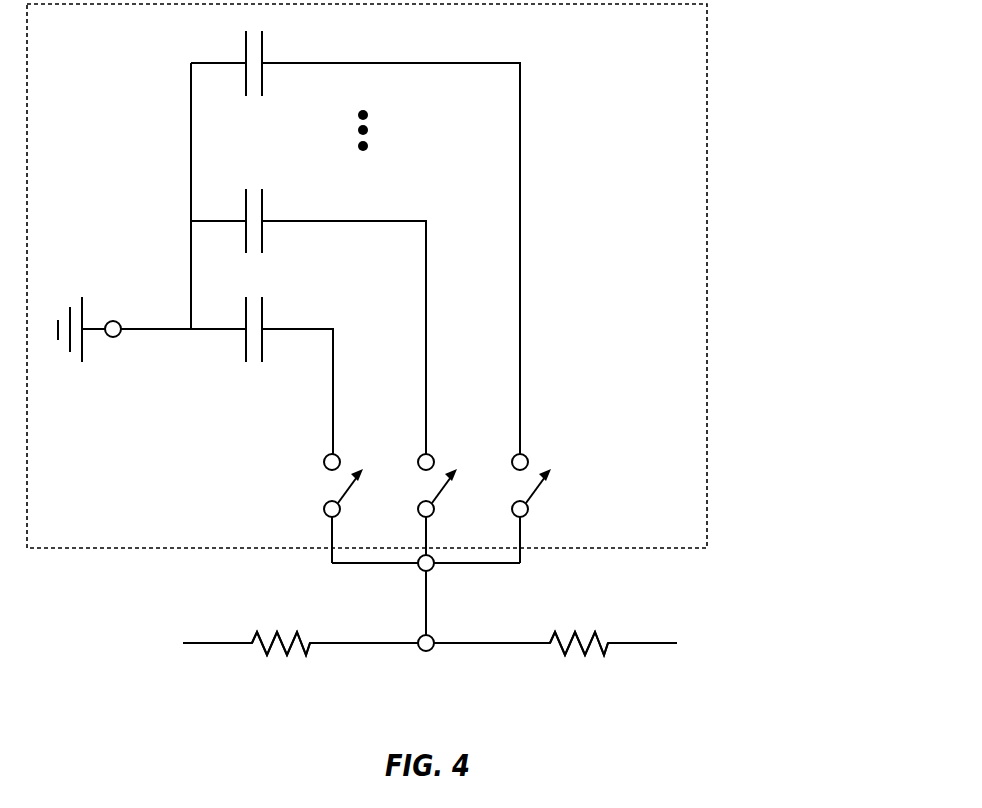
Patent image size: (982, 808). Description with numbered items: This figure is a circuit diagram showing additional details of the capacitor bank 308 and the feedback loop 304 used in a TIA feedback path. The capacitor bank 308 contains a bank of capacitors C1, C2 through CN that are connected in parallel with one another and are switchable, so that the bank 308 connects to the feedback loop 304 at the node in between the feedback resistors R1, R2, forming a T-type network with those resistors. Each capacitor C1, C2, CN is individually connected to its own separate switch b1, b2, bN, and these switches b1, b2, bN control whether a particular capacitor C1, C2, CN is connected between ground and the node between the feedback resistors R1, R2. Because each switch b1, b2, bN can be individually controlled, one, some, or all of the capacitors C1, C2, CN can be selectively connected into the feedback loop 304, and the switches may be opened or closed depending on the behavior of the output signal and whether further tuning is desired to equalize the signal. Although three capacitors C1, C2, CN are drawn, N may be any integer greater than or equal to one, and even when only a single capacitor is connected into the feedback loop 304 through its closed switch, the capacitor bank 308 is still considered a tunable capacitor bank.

The capacitor bank 308 is at (419, 319).
The feedback loop 304 is at (517, 643).
The capacitor C1 is at (289, 374).
The capacitor C2 is at (308, 319).
The capacitor CN is at (355, 241).
The switch b1 is at (325, 508).
The switch b2 is at (425, 504).
The switch bN is at (518, 508).
The feedback resistor R1 is at (579, 630).
The feedback resistor R2 is at (281, 626).